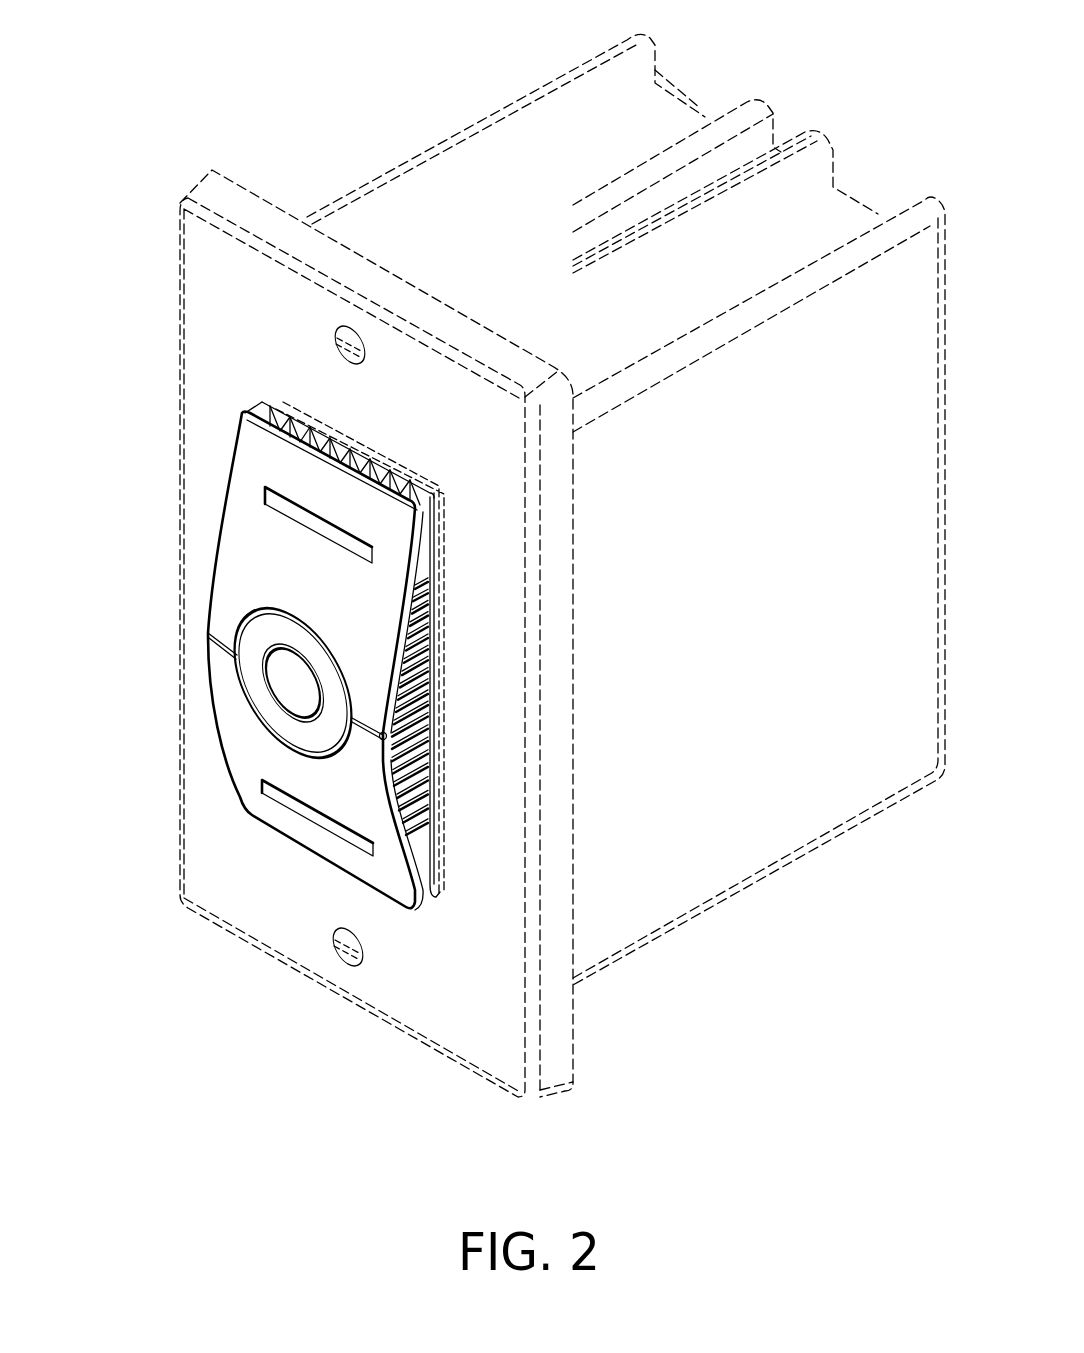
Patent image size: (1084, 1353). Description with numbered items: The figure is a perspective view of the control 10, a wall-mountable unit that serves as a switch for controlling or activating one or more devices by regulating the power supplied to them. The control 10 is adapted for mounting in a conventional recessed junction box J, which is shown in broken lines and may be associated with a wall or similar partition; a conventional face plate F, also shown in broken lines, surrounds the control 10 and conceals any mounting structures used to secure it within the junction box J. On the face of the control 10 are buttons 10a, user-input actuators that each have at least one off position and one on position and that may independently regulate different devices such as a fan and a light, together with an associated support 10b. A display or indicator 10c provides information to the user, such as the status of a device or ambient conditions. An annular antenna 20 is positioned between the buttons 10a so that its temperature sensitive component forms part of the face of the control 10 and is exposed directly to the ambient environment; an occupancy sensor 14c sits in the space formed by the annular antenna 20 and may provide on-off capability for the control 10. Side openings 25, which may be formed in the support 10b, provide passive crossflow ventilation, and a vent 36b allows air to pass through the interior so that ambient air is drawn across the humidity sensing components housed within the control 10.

The face plate F is at (236, 206).
The junction box J is at (720, 904).
The control 10 is at (150, 507).
The button 10a is at (242, 447).
The support 10b is at (423, 566).
The display or indicator 10c is at (282, 504).
The occupancy sensor 14c is at (293, 690).
The antenna 20 is at (325, 668).
The side openings 25 is at (428, 807).
The bottom vent 36b is at (402, 456).